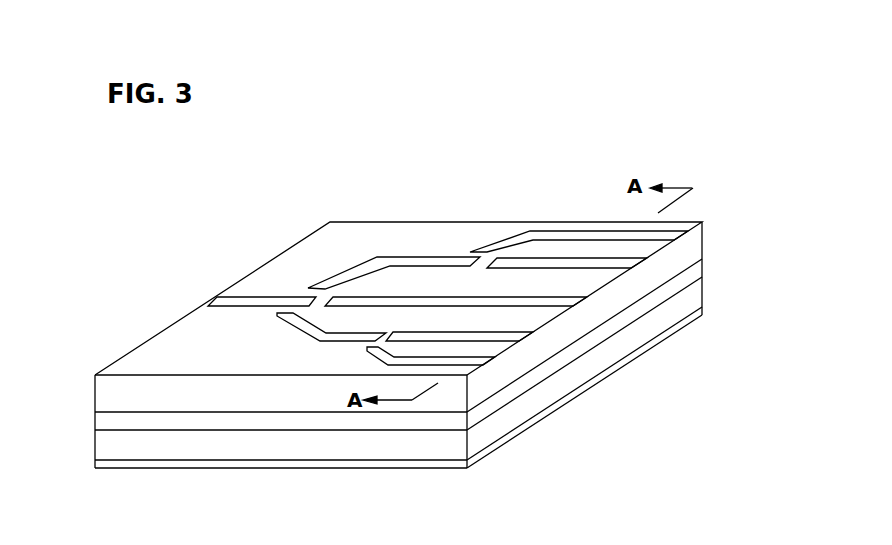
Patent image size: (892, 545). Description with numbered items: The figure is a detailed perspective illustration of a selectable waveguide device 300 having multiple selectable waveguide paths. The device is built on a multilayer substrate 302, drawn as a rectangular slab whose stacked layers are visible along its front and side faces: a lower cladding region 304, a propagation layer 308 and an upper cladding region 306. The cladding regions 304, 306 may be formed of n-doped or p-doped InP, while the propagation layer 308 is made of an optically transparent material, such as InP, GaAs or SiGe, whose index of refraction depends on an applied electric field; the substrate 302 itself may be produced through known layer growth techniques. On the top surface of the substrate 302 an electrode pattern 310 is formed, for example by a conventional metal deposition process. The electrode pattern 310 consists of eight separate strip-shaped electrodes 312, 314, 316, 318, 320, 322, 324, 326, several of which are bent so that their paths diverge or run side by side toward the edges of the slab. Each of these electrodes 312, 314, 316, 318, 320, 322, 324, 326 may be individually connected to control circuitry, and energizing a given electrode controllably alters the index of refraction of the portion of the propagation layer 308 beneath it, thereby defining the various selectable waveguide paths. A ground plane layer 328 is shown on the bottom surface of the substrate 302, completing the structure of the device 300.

The selectable waveguide device 300 is at (215, 168).
The multilayer substrate 302 is at (70, 403).
The lower cladding region 304 is at (462, 446).
The upper cladding region 306 is at (692, 245).
The propagation layer 308 is at (703, 268).
The electrode pattern 310 is at (366, 172).
The electrode 312 is at (222, 307).
The electrode 314 is at (537, 306).
The electrode 316 is at (413, 266).
The electrode 318 is at (609, 276).
The electrode 320 is at (310, 336).
The electrode 322 is at (520, 332).
The electrode 324 is at (555, 231).
The electrode 326 is at (445, 370).
The ground plane layer 328 is at (124, 468).